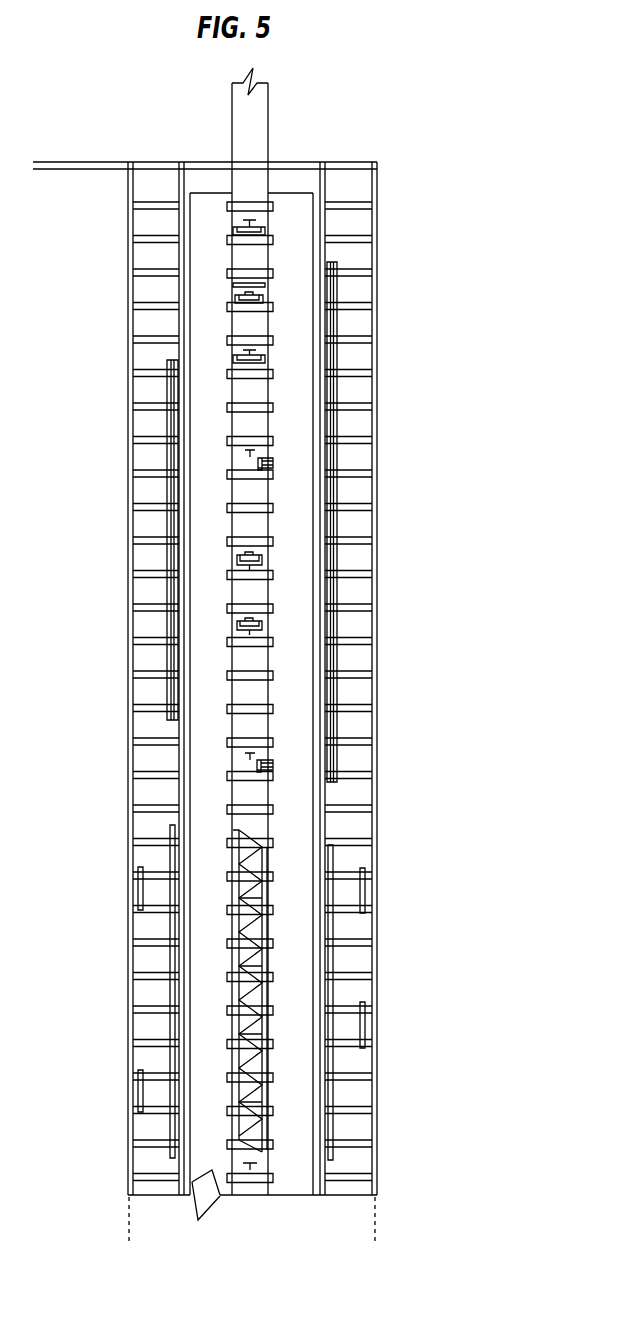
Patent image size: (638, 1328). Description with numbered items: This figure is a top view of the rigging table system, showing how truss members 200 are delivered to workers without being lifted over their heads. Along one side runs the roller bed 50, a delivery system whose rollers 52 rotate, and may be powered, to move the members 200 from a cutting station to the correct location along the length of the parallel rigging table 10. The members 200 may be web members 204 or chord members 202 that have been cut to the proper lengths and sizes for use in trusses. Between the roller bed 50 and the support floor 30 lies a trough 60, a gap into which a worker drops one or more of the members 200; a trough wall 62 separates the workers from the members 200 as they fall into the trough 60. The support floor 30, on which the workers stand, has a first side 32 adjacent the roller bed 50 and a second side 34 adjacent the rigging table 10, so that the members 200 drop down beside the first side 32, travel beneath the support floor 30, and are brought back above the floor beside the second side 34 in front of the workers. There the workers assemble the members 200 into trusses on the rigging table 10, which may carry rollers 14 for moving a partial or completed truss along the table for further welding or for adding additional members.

The rigging table 10 is at (272, 258).
The rollers 14 is at (267, 558).
The support floor 30 is at (213, 207).
The first side 32 is at (313, 498).
The second side 34 is at (232, 263).
The roller bed 50 is at (145, 257).
The rollers 52 is at (130, 336).
The trough 60 is at (188, 1195).
The trough wall 62 is at (310, 1180).
The members 200 is at (168, 552).
The chord members 202 is at (237, 832).
The web members 204 is at (253, 1152).